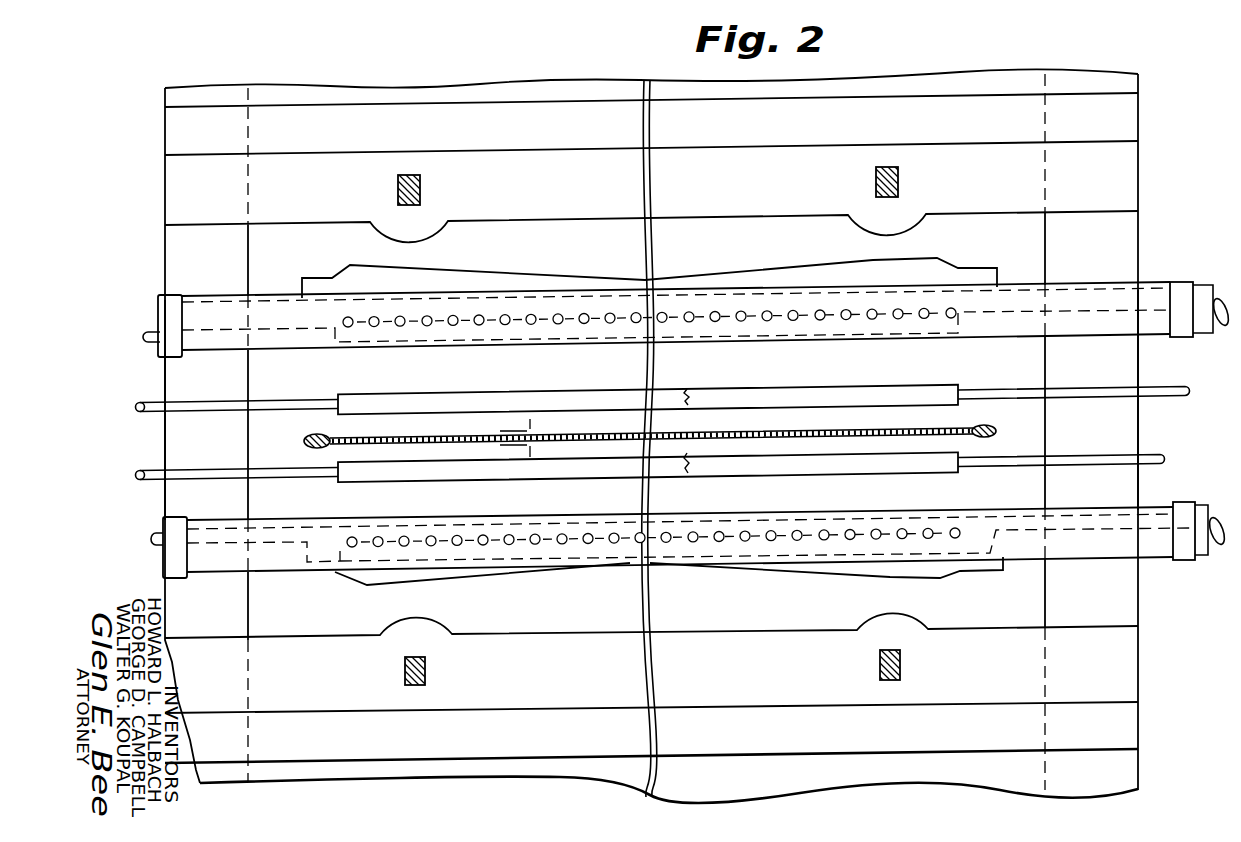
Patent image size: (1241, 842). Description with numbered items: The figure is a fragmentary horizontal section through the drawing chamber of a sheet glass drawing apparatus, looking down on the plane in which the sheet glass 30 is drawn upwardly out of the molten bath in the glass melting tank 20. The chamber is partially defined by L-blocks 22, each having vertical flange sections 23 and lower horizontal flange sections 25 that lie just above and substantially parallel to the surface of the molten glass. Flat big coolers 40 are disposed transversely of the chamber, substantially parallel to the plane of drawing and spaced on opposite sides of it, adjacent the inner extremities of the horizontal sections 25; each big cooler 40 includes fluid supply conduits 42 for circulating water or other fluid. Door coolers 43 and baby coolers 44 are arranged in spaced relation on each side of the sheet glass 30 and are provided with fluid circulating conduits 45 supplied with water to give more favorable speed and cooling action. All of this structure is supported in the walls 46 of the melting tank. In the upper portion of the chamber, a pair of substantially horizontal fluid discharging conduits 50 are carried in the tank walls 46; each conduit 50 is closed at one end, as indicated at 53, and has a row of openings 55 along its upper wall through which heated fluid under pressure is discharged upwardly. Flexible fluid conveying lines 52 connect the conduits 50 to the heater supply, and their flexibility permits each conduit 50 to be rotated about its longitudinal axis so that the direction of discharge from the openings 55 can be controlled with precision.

The glass melting tank 20 is at (162, 131).
The L-blocks 22 is at (321, 156).
The vertical flange sections 23 is at (180, 224).
The lower horizontal flange sections 25 is at (176, 267).
The sheet glass 30 is at (445, 437).
The big coolers 40 is at (335, 343).
The fluid supply conduits 42 is at (145, 340).
The door coolers 43 is at (390, 396).
The baby coolers 44 is at (658, 462).
The fluid circulating conduits 45 is at (150, 470).
The walls 46 is at (168, 385).
The fluid discharging conduits 50 is at (585, 293).
The flexible fluid conveying lines 52 is at (1203, 290).
The closed end 53 is at (158, 314).
The openings 55 is at (762, 310).